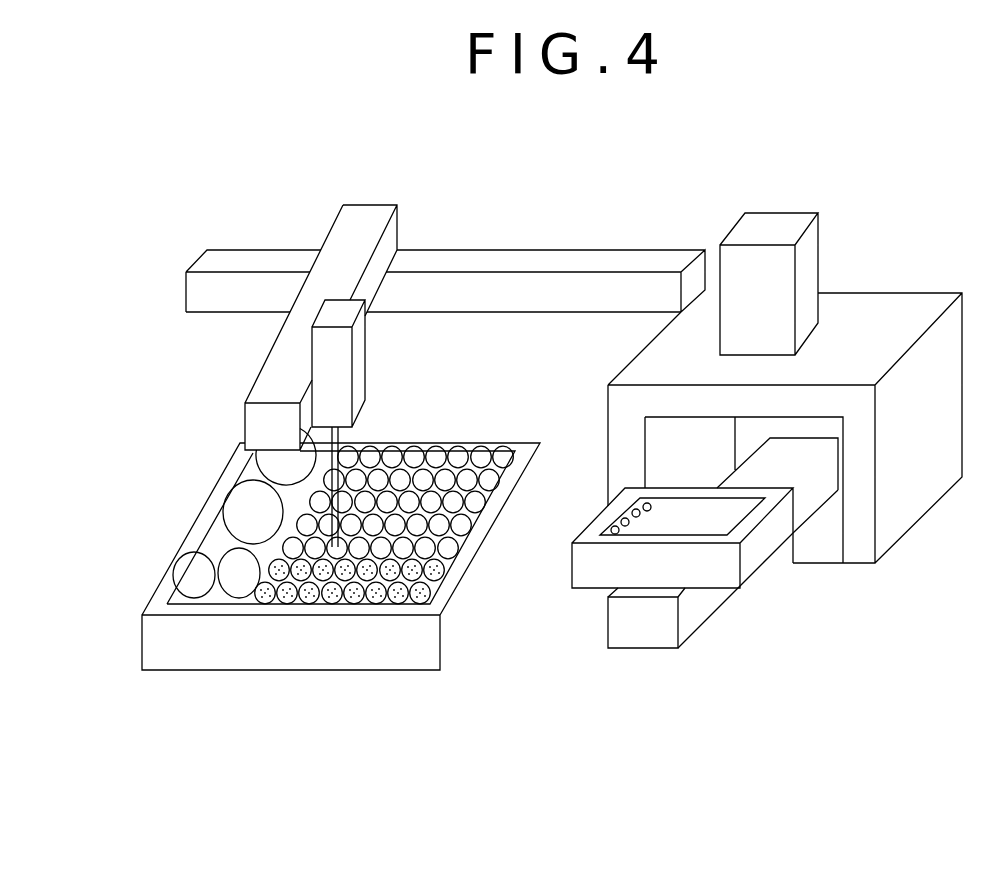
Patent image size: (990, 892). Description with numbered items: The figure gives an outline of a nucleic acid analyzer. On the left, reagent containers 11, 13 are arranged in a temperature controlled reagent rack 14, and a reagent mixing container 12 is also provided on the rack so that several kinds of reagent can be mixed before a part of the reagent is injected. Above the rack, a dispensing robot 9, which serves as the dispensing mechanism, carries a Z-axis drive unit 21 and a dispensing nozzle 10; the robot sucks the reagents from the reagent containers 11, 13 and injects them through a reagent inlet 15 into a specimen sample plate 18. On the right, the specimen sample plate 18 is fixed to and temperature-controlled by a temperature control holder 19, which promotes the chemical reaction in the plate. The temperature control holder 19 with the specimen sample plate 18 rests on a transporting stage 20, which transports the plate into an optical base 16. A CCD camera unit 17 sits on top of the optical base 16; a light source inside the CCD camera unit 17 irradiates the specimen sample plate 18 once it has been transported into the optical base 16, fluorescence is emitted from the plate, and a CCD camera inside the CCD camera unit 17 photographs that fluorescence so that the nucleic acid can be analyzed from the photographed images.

The dispensing robot 9 is at (472, 259).
The dispensing nozzle 10 is at (348, 447).
The reagent container 11 is at (450, 550).
The reagent mixing container 12 is at (420, 593).
The reagent container 13 is at (237, 513).
The temperature controlled reagent rack 14 is at (397, 663).
The reagent inlet 15 is at (615, 523).
The optical base 16 is at (615, 417).
The CCD camera unit 17 is at (773, 220).
The specimen sample plate 18 is at (720, 520).
The temperature control holder 19 is at (705, 579).
The transporting stage 20 is at (630, 633).
The Z-axis drive unit 21 is at (358, 380).